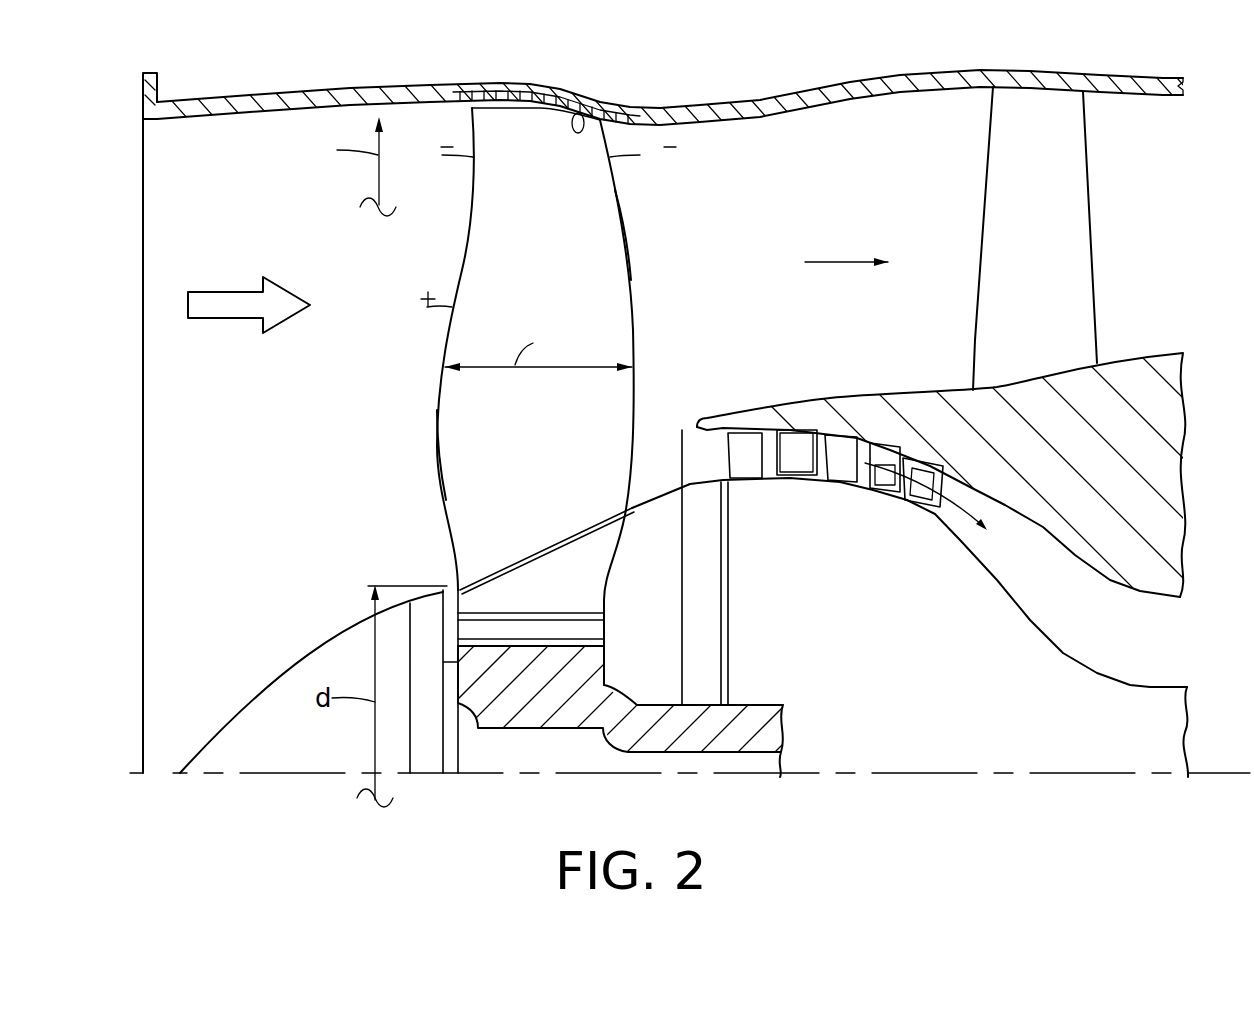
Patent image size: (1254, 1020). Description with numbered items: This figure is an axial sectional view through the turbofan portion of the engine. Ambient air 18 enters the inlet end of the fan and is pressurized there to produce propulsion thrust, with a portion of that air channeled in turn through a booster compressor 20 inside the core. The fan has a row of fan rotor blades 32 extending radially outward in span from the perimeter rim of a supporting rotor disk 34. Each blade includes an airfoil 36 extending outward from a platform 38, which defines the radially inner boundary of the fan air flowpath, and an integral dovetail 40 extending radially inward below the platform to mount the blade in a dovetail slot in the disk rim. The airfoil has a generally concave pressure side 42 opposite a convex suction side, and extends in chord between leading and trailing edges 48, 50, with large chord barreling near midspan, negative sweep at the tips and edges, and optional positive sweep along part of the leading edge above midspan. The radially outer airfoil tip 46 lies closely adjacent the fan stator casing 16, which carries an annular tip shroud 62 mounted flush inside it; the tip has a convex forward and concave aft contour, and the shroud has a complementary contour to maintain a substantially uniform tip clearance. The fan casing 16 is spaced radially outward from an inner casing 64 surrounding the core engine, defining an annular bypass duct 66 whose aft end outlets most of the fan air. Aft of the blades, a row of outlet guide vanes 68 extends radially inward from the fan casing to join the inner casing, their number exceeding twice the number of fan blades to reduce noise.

The fan stator casing 16 is at (320, 90).
The ambient air 18 is at (232, 330).
The booster compressor 20 is at (846, 418).
The fan rotor blades 32 is at (430, 446).
The rotor disk 34 is at (557, 705).
The airfoil 36 is at (620, 242).
The platform 38 is at (593, 520).
The dovetail 40 is at (590, 630).
The pressure side 42 is at (506, 396).
The airfoil tip 46 is at (502, 103).
The leading edge 48 is at (467, 253).
The trailing edge 50 is at (633, 315).
The tip shroud 62 is at (580, 113).
The inner casing 64 is at (1101, 460).
The bypass duct 66 is at (869, 222).
The outlet guide vanes 68 is at (1047, 275).